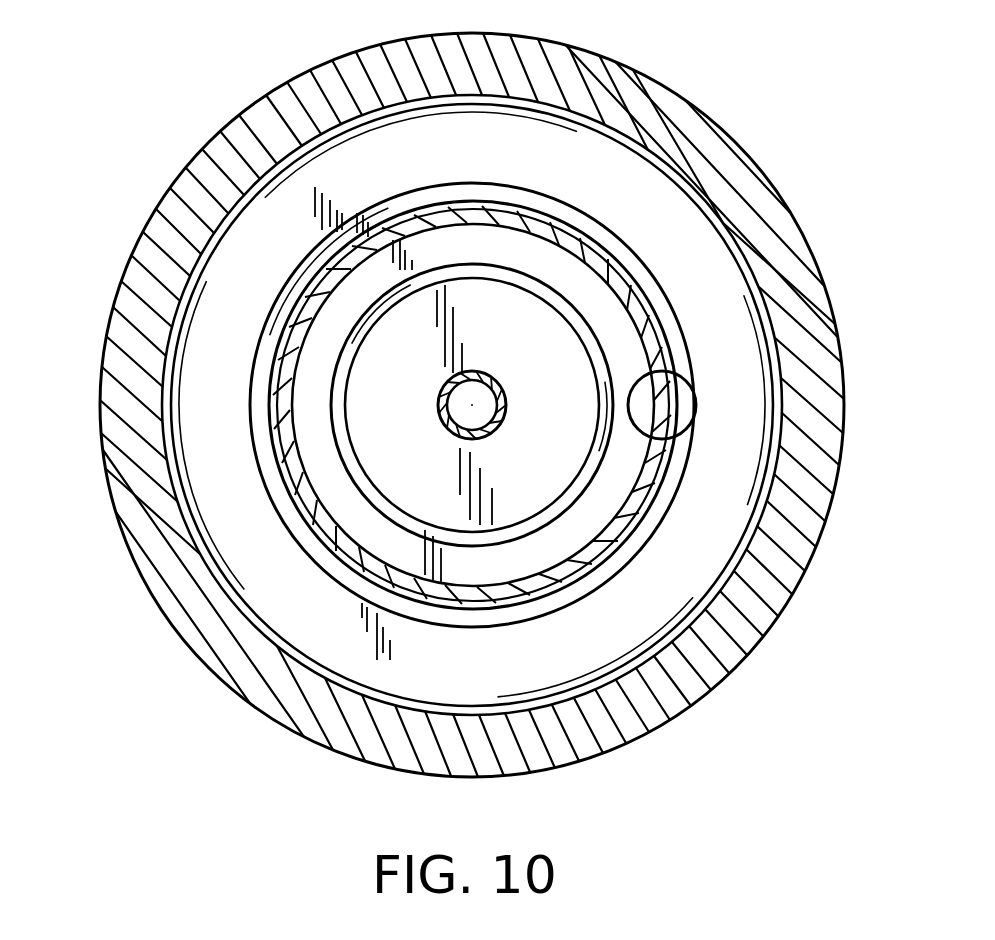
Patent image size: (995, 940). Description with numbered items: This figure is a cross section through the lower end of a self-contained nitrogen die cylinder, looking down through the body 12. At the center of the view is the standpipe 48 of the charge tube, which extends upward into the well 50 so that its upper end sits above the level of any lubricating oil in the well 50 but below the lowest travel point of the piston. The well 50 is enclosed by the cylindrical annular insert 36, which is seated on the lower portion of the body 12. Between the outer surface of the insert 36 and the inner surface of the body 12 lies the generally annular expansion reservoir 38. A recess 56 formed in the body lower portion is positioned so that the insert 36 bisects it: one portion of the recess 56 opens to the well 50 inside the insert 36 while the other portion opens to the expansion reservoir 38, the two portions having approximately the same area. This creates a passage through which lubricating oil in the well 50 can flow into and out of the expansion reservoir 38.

The body 12 is at (720, 124).
The annular insert 36 is at (662, 475).
The expansion reservoir 38 is at (225, 455).
The standpipe 48 is at (490, 372).
The well 50 is at (400, 416).
The recess 56 is at (683, 405).